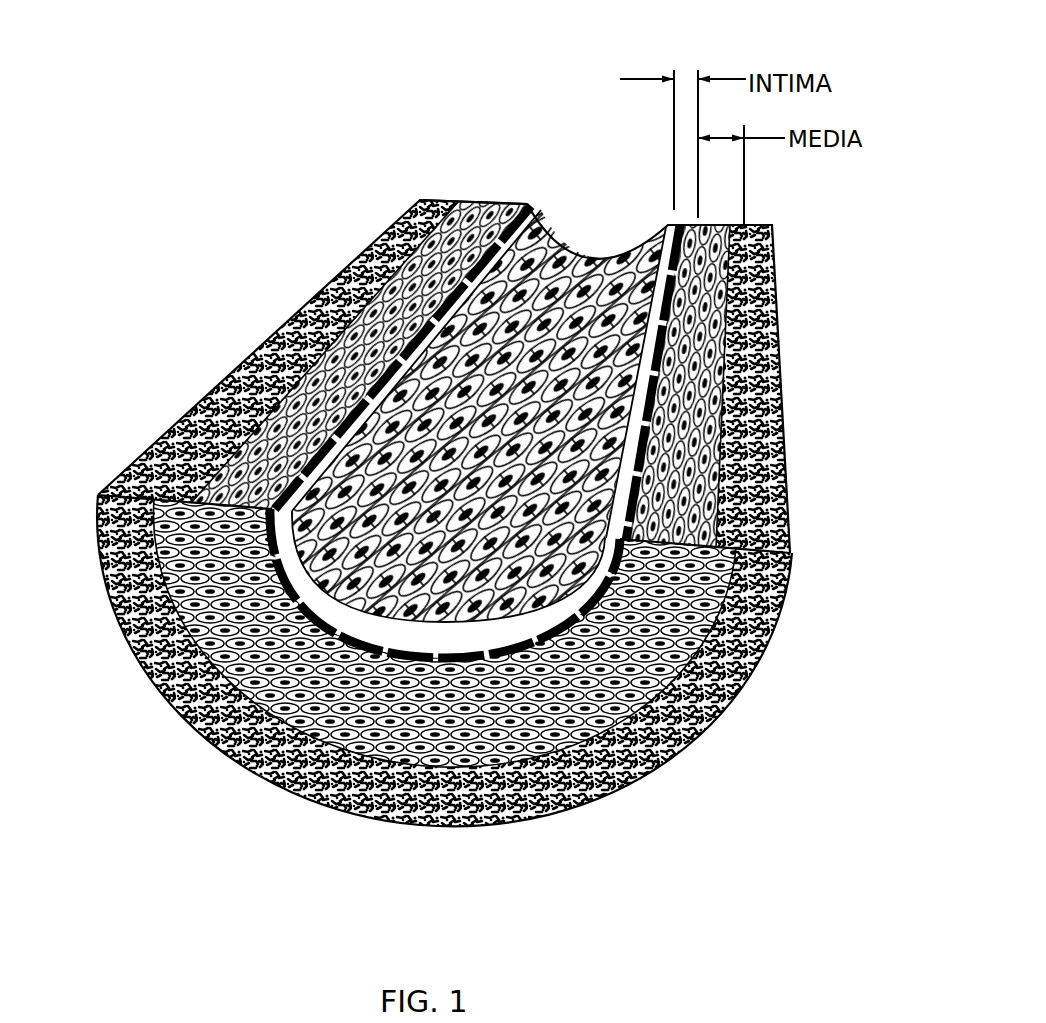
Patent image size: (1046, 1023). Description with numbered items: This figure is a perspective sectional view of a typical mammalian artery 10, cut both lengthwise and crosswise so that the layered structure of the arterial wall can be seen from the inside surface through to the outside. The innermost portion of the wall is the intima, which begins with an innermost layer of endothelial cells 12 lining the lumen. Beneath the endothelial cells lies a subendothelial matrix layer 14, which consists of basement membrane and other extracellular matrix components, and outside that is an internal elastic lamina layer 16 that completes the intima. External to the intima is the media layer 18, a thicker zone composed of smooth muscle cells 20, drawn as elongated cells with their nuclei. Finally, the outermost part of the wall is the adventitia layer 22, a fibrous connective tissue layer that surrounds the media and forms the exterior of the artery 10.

The artery 10 is at (808, 405).
The endothelial cells 12 is at (320, 627).
The subendothelial matrix layer 14 is at (392, 633).
The internal elastic lamina layer 16 is at (523, 203).
The media layer 18 is at (514, 197).
The smooth muscle cells 20 is at (373, 290).
The adventitia layer 22 is at (207, 413).